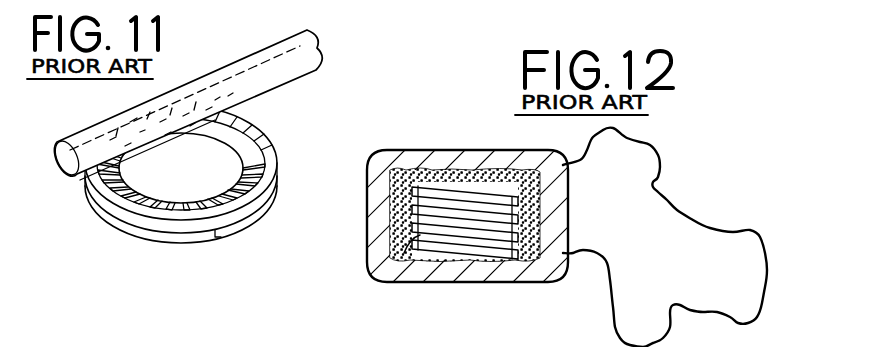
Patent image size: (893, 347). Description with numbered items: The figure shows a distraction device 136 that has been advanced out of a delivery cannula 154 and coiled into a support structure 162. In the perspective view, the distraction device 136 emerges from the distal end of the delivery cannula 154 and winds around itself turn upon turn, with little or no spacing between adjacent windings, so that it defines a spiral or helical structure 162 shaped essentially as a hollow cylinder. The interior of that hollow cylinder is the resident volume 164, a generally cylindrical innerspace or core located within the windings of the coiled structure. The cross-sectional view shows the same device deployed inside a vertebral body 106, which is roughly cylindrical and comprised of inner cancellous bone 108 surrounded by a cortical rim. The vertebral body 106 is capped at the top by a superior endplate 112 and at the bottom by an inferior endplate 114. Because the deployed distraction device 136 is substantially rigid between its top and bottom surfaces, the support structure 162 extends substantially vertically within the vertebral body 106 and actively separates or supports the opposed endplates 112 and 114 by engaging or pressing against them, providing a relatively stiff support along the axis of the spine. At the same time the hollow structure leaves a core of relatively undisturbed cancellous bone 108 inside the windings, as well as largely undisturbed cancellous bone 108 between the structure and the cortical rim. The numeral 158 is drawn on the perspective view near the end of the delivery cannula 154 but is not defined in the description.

In FIG. 11, the delivery cannula 154 is at (218, 134).
In FIG. 11, the tube end cap 158 is at (63, 165).
In FIG. 11, the resident volume 164 is at (168, 168).
In FIG. 12, the resident volume 164 is at (460, 262).
In FIG. 11, the distraction device 136 is at (176, 197).
In FIG. 12, the distraction device 136 is at (366, 272).
In FIG. 11, the support structure 162 is at (236, 220).
In FIG. 12, the support structure 162 is at (407, 230).
In FIG. 12, the vertebral body 106 is at (373, 184).
In FIG. 12, the superior endplate 112 is at (527, 157).
In FIG. 12, the inferior endplate 114 is at (527, 270).
In FIG. 12, the cancellous bone 108 is at (398, 213).